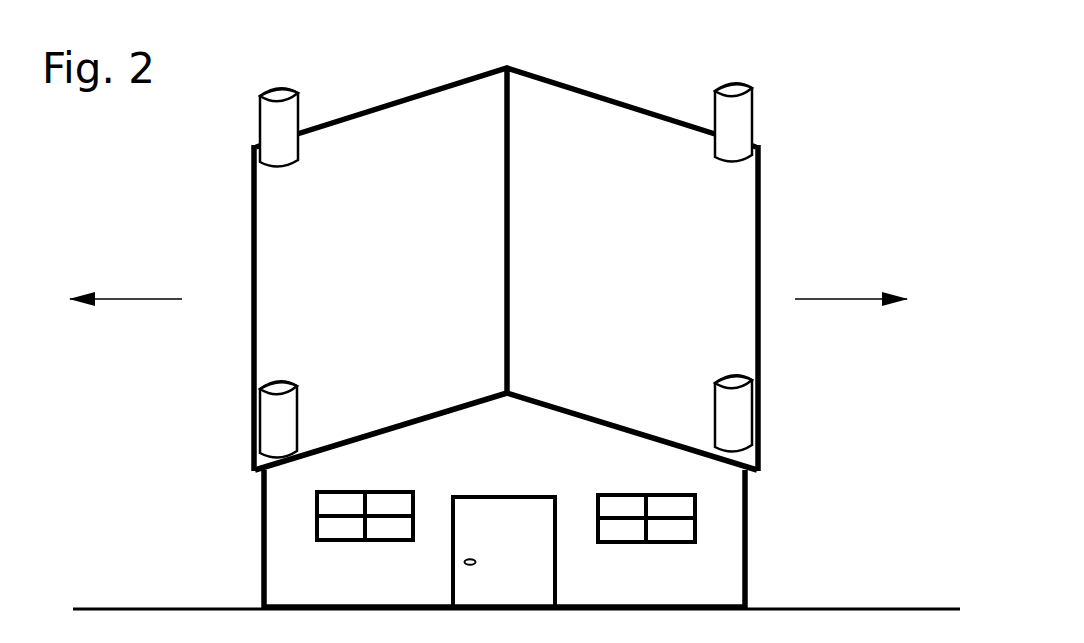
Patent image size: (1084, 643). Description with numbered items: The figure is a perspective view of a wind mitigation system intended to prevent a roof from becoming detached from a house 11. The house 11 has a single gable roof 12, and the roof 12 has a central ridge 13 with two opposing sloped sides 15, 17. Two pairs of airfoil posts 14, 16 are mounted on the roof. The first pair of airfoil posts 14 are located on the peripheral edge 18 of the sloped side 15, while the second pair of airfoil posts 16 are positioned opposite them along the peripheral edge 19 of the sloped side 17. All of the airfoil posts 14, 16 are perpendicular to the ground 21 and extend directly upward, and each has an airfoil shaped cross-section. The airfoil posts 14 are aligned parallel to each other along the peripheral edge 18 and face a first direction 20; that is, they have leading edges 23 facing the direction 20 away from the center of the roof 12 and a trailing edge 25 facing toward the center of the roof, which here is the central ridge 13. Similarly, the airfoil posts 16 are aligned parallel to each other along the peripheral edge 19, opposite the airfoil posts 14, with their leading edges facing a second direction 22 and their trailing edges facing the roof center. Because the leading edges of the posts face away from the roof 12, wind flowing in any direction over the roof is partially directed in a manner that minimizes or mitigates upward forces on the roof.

The house 11 is at (504, 528).
The gable roof 12 is at (450, 99).
The central ridge 13 is at (505, 150).
The first pair of airfoil posts 14 is at (311, 70).
The sloped side 15 is at (381, 297).
The second pair of airfoil posts 16 is at (782, 94).
The sloped side 17 is at (632, 297).
The peripheral edge 18 is at (253, 253).
The peripheral edge 19 is at (760, 205).
The first direction 20 is at (147, 299).
The ground 21 is at (153, 608).
The second direction 22 is at (830, 298).
The leading edges 23 is at (262, 122).
The trailing edge 25 is at (298, 140).